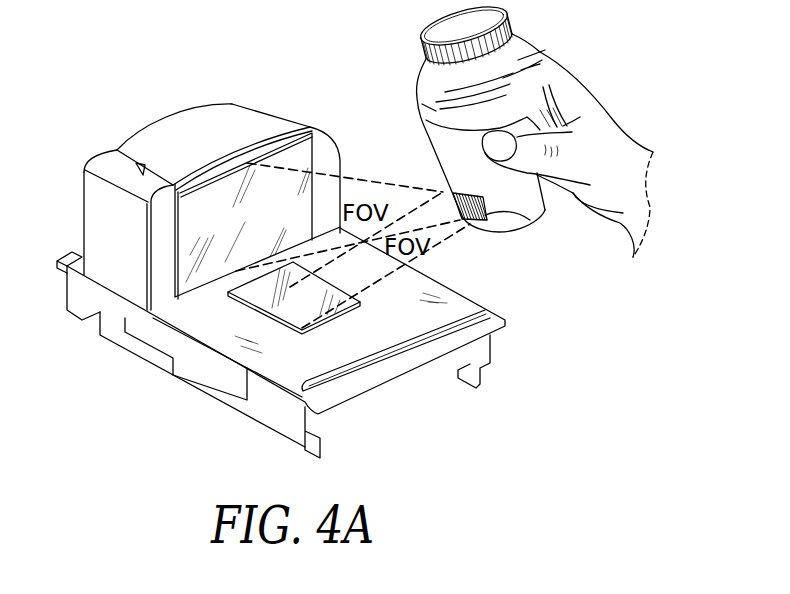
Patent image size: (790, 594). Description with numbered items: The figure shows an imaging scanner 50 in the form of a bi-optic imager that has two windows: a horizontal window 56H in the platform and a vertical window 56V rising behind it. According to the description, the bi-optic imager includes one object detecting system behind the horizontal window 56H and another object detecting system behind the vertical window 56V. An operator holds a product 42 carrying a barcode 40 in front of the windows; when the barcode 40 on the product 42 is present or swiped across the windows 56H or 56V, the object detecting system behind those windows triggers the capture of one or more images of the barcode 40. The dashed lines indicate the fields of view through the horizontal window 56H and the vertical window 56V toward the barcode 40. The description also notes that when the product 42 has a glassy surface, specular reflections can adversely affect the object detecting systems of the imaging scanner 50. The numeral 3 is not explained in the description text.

The scanner housing 3 is at (93, 215).
The vertical window 56V is at (213, 192).
The horizontal window 56H is at (303, 318).
The imaging scanner 50 is at (273, 75).
The barcode 40 is at (505, 214).
The product 42 is at (420, 80).